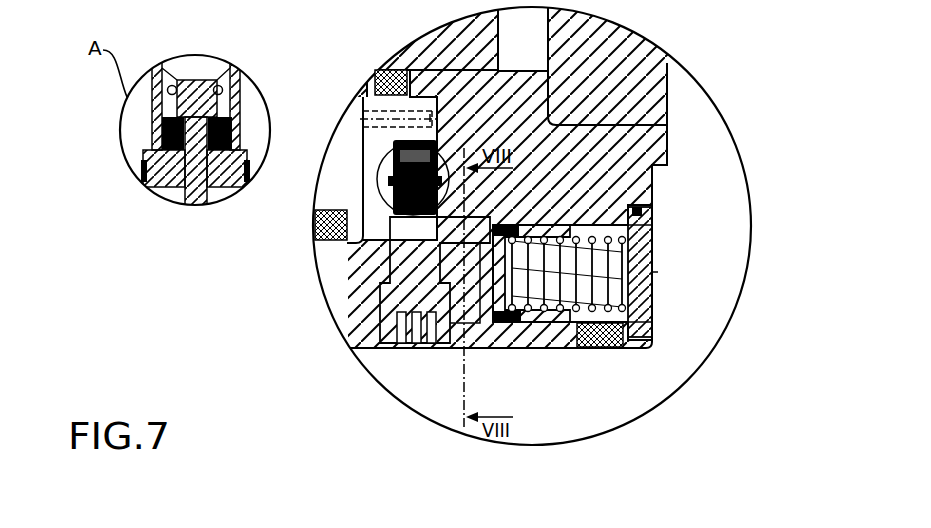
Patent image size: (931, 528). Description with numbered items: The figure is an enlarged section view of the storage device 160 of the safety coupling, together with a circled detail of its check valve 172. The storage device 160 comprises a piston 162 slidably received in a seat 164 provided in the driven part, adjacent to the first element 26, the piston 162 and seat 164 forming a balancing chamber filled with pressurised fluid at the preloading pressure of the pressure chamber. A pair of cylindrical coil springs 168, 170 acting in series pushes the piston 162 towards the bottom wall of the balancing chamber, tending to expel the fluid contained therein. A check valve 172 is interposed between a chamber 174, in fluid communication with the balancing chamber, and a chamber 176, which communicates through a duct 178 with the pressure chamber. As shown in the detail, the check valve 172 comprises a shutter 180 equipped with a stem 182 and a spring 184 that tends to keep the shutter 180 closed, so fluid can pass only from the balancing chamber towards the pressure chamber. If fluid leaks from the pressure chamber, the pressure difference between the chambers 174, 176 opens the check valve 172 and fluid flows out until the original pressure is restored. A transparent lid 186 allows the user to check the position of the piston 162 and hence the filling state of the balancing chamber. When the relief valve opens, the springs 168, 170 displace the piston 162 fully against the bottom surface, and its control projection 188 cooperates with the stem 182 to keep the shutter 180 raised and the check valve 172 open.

The first element 26 is at (633, 177).
The storage device 160 is at (548, 352).
The piston 162 is at (495, 327).
The seat 164 is at (535, 328).
The spring 168 is at (617, 347).
The spring 170 is at (653, 255).
The check valve 172 is at (362, 121).
The chamber 174 is at (395, 255).
The chamber 176 is at (400, 140).
The duct 178 is at (382, 76).
The shutter 180 is at (200, 80).
The stem 182 is at (210, 187).
The spring 184 is at (220, 92).
The transparent lid 186 is at (588, 350).
The control projection 188 is at (418, 349).